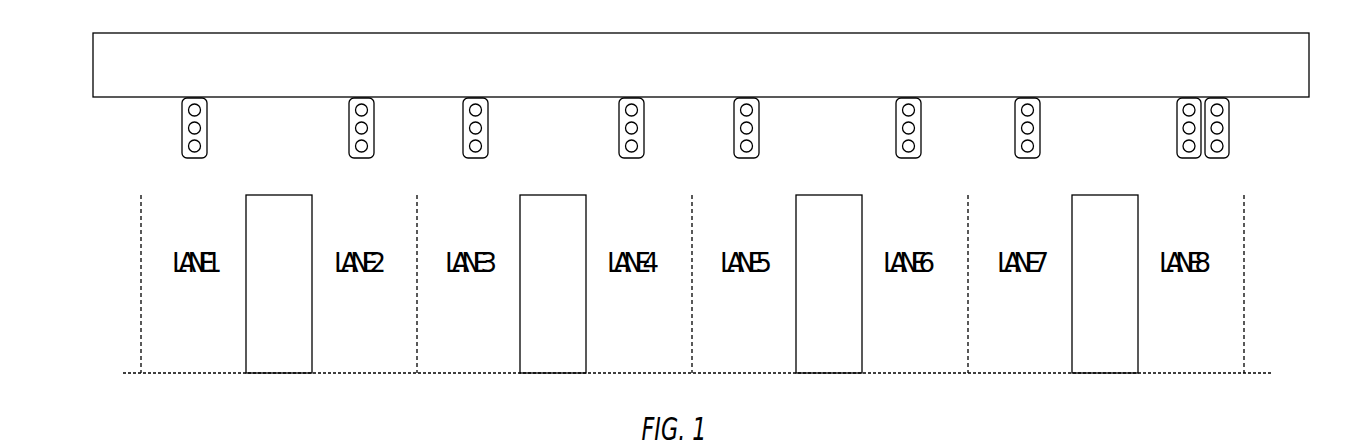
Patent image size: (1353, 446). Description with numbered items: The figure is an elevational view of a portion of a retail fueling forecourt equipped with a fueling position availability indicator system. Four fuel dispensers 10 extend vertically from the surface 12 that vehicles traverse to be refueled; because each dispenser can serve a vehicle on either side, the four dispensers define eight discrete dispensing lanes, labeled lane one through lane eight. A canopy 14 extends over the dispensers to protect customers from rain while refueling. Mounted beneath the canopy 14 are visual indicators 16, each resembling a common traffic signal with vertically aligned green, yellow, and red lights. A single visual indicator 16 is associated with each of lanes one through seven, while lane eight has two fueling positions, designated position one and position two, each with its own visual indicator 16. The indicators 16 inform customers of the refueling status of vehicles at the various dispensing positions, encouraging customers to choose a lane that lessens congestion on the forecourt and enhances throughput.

The fuel dispenser 10 is at (312, 238).
The surface 12 is at (1258, 372).
The canopy 14 is at (254, 98).
The visual indicator 16 is at (182, 121).